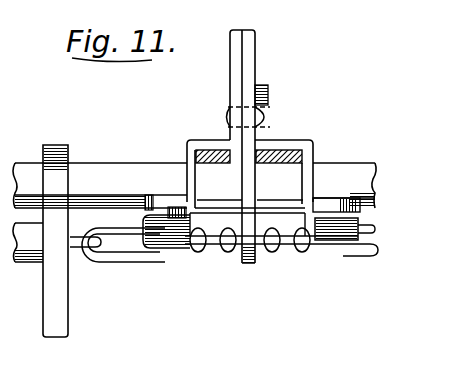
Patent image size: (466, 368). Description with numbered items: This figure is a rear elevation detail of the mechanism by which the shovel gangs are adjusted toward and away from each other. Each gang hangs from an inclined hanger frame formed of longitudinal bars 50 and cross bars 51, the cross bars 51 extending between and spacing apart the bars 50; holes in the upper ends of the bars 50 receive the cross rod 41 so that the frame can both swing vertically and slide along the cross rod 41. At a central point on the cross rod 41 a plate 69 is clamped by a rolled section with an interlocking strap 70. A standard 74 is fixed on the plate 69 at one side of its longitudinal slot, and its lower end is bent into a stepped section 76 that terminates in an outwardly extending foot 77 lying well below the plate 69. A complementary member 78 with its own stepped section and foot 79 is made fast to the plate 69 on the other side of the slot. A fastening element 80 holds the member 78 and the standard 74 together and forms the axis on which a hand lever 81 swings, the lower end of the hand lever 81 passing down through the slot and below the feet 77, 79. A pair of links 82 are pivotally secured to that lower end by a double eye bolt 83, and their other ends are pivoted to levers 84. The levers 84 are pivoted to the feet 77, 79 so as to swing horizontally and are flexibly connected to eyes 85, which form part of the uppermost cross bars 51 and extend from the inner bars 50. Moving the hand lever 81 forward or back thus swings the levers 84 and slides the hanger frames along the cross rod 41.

The cross rod 41 is at (92, 171).
The longitudinal bars 50 is at (62, 322).
The cross bars 51 is at (37, 263).
The plate 69 is at (291, 155).
The interlocking strap 70 is at (300, 253).
The standard 74 is at (240, 82).
The stepped section 76 is at (190, 146).
The foot 77 is at (161, 200).
The complementary member 78 is at (313, 157).
The foot 79 is at (335, 202).
The fastening element 80 is at (272, 115).
The hand lever 81 is at (250, 67).
The links 82 is at (210, 246).
The double eye bolt 83 is at (271, 253).
The levers 84 is at (336, 240).
The eyes 85 is at (80, 251).